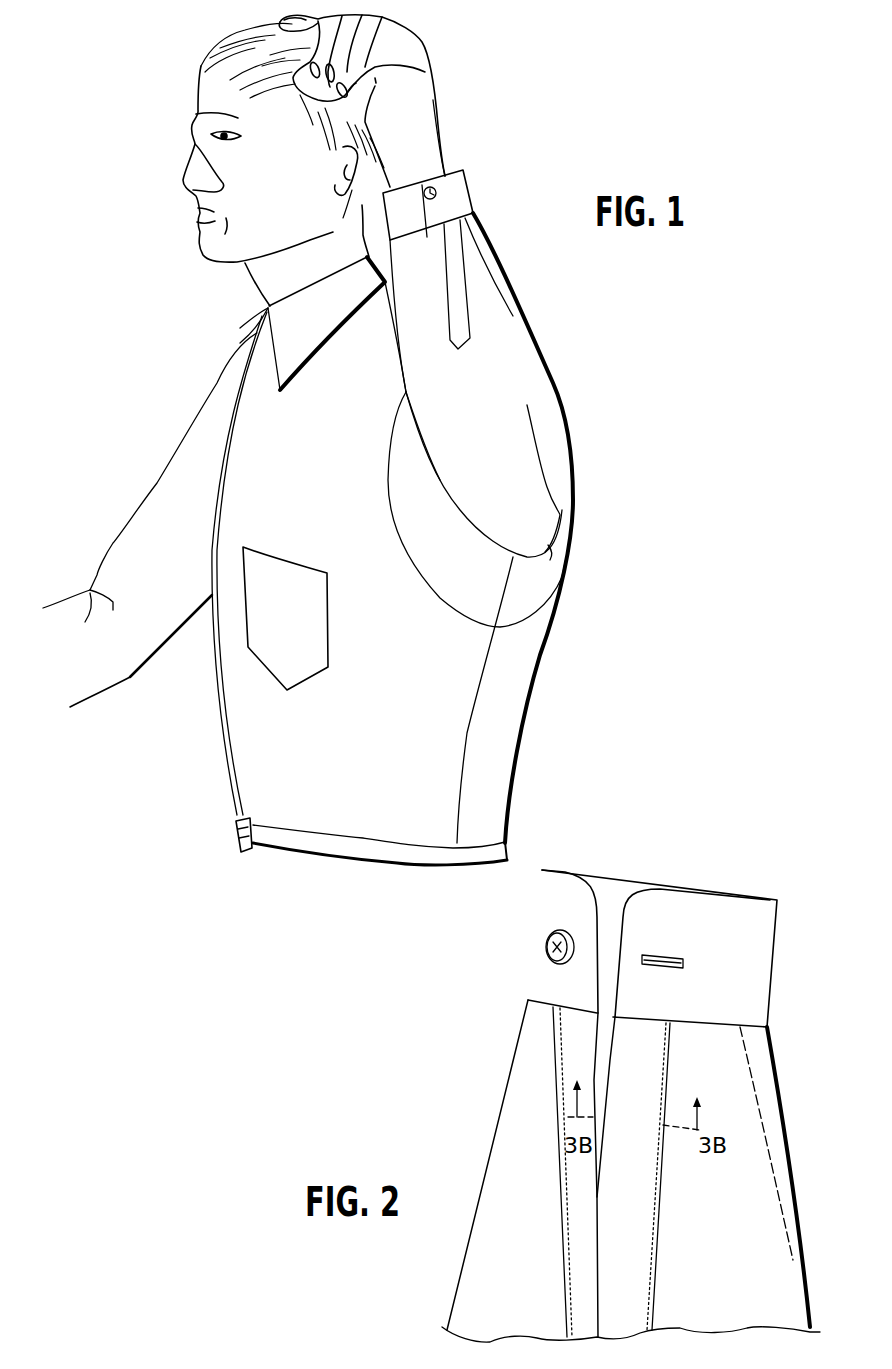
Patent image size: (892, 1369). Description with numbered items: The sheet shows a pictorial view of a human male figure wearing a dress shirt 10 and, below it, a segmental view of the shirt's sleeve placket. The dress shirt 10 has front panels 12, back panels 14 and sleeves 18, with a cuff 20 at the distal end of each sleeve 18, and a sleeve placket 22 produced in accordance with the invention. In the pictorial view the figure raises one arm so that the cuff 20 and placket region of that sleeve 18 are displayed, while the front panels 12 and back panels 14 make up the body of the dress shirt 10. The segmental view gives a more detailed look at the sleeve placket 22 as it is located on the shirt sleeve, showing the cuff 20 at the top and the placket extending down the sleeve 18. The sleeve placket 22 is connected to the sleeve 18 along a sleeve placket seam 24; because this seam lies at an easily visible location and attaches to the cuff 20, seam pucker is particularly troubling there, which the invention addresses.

In FIG. 1, the dress shirt 10 is at (200, 338).
In FIG. 1, the front panels 12 is at (285, 588).
In FIG. 1, the back panels 14 is at (520, 683).
In FIG. 1, the sleeves 18 is at (170, 493).
In FIG. 2, the sleeves 18 is at (487, 1253).
In FIG. 1, the cuff 20 is at (463, 190).
In FIG. 2, the cuff 20 is at (763, 884).
In FIG. 2, the sleeve placket 22 is at (562, 1073).
In FIG. 2, the sleeve placket seam 24 is at (640, 1273).